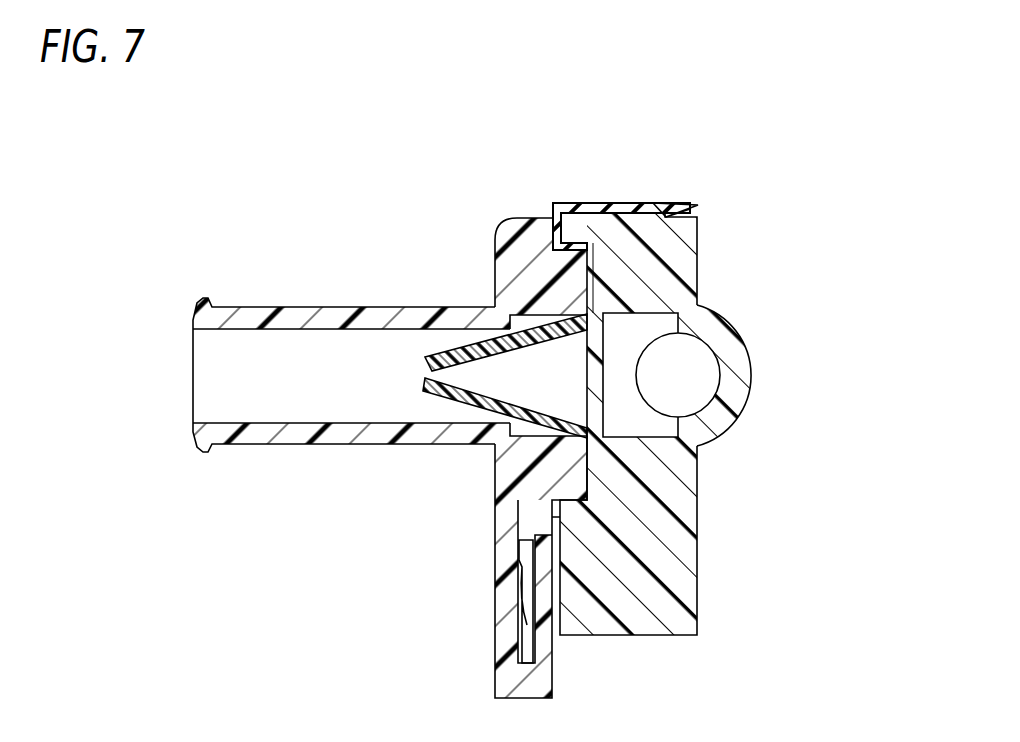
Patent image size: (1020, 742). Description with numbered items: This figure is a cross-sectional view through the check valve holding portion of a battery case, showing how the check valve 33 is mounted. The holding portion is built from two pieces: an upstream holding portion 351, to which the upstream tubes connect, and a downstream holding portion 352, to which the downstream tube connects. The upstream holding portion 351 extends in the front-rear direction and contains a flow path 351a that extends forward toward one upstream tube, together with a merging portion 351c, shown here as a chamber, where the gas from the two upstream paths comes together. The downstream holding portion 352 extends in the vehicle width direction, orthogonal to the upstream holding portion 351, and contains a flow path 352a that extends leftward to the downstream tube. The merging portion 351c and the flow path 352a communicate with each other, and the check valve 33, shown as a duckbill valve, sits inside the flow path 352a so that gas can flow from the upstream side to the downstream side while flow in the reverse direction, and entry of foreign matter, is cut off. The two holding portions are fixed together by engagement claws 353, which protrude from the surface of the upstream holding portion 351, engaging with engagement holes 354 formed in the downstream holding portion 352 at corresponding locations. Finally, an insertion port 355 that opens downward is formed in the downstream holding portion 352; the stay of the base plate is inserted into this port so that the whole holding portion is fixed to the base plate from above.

The check valve 33 is at (453, 343).
The upstream holding portion 351 is at (703, 222).
The flow path 351a is at (700, 367).
The merging portion 351c is at (645, 332).
The downstream holding portion 352 is at (502, 215).
The flow path 352a is at (282, 347).
The engagement claw 353 is at (663, 203).
The engagement hole 354 is at (603, 212).
The insertion port 355 is at (523, 603).